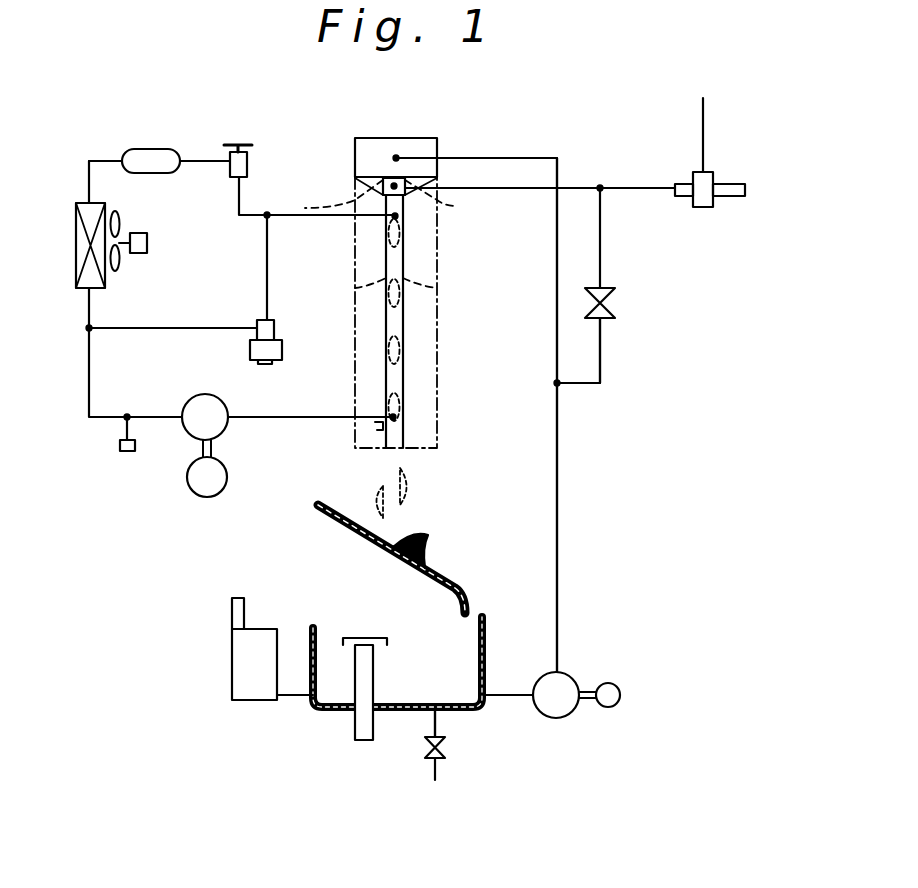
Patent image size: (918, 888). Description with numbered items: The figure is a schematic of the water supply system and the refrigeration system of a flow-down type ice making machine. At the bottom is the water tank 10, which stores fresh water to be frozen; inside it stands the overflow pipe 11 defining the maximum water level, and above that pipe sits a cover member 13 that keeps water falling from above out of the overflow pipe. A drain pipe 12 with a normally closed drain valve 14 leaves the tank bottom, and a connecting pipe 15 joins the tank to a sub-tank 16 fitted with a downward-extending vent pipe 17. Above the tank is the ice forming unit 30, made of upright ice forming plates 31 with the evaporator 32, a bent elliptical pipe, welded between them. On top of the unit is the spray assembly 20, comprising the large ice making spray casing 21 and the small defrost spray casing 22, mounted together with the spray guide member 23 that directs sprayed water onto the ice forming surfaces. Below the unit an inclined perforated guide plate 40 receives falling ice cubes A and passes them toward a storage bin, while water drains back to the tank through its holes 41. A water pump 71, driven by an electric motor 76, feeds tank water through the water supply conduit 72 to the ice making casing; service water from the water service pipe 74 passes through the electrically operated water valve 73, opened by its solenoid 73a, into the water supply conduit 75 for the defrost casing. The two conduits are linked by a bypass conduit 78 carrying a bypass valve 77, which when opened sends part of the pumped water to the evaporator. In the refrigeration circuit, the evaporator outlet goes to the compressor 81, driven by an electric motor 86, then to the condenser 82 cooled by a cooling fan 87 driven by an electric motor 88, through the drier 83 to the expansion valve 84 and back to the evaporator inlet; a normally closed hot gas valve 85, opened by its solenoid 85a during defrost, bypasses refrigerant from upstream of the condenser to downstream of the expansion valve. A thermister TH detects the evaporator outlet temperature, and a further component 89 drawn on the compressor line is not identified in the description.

The water tank 10 is at (486, 634).
The overflow pipe 11 is at (374, 675).
The drain pipe 12 is at (438, 721).
The cover member 13 is at (363, 637).
The drain valve 14 is at (424, 748).
The connecting pipe 15 is at (294, 698).
The sub-tank 16 is at (231, 668).
The vent pipe 17 is at (231, 612).
The spray assembly 20 is at (352, 154).
The ice making spray casing 21 is at (395, 138).
The defrost spray casing 22 is at (383, 186).
The spray guide member 23 is at (386, 199).
The ice forming unit 30 is at (437, 240).
The ice forming plates 31 is at (354, 287).
The evaporator 32 is at (398, 298).
The thermister TH is at (380, 428).
The ice cubes A is at (412, 496).
The perforated guide plate 40 is at (323, 513).
The holes 41 is at (428, 535).
The water pump 71 is at (556, 718).
The water supply conduit 72 is at (493, 158).
The water valve 73 is at (702, 209).
The solenoid 73a is at (745, 190).
The water service pipe 74 is at (705, 133).
The water supply conduit 75 is at (626, 187).
The electric motor 76 is at (620, 694).
The bypass valve 77 is at (616, 304).
The bypass conduit 78 is at (602, 365).
The compressor 81 is at (222, 433).
The condenser 82 is at (76, 255).
The drier 83 is at (148, 156).
The expansion valve 84 is at (247, 163).
The hot gas valve 85 is at (275, 331).
The solenoid 85a is at (249, 352).
The electric motor 86 is at (191, 482).
The cooling fan 87 is at (118, 268).
The electric motor 88 is at (147, 244).
The pressure switch 89 is at (119, 446).